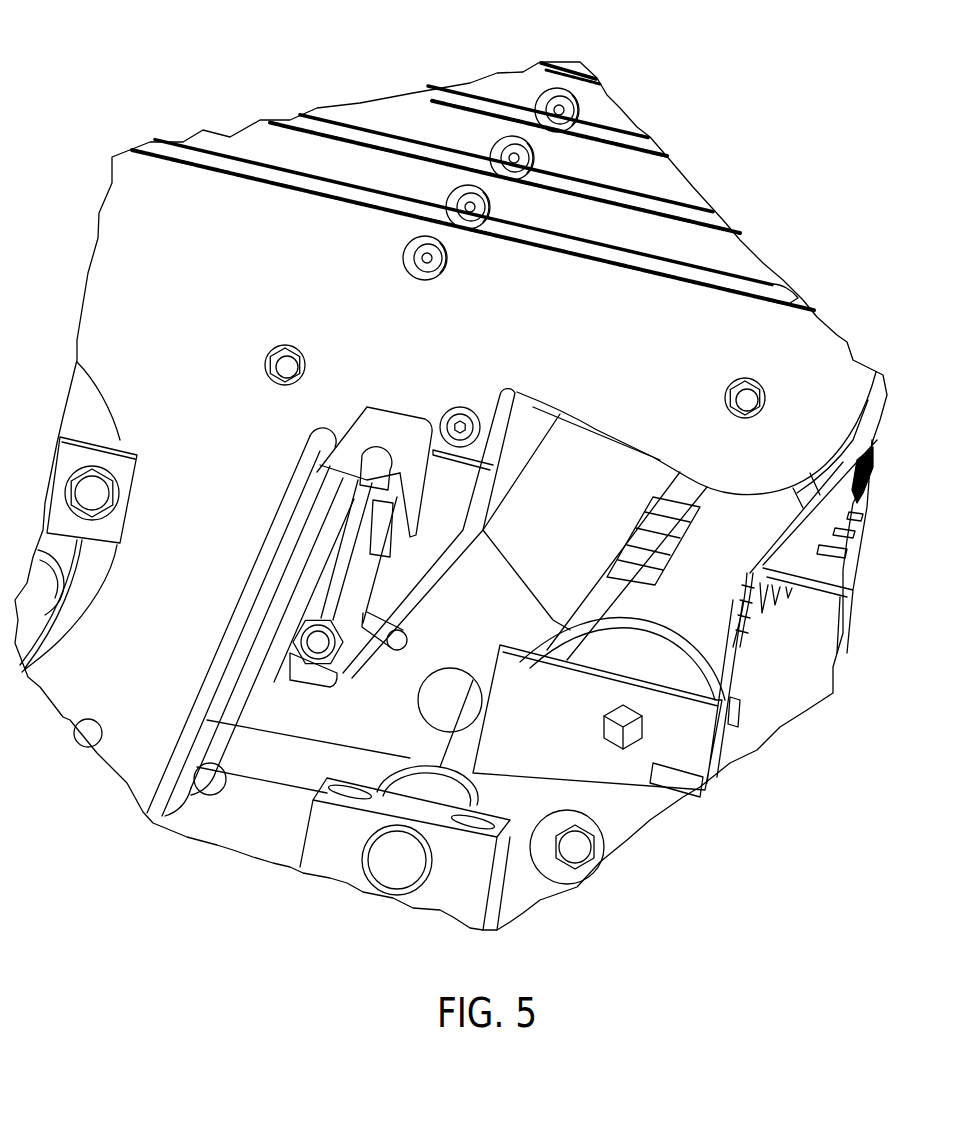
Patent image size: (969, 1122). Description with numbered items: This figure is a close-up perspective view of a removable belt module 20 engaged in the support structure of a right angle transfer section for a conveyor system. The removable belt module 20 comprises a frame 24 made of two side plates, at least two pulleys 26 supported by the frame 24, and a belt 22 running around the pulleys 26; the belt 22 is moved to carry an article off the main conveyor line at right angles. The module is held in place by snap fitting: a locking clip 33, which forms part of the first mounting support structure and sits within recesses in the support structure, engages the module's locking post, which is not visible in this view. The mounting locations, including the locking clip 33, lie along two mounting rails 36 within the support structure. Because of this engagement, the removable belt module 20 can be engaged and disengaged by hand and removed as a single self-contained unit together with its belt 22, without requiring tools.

The removable belt module 20 is at (735, 497).
The belt 22 is at (632, 262).
The frame 24 is at (454, 337).
The pulley 26 is at (307, 442).
The locking clip 33 is at (480, 498).
The mounting rail 36 is at (530, 458).